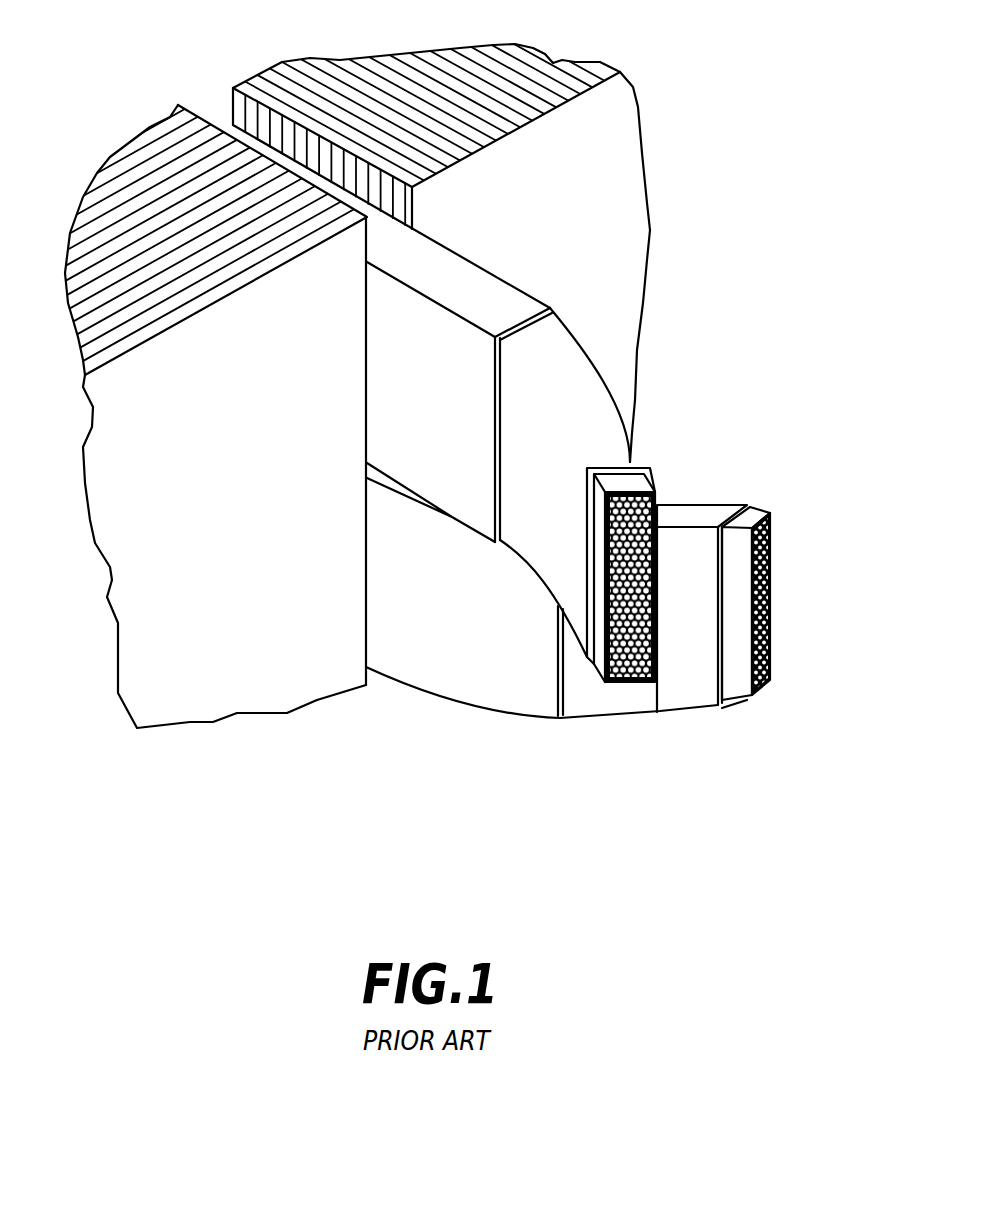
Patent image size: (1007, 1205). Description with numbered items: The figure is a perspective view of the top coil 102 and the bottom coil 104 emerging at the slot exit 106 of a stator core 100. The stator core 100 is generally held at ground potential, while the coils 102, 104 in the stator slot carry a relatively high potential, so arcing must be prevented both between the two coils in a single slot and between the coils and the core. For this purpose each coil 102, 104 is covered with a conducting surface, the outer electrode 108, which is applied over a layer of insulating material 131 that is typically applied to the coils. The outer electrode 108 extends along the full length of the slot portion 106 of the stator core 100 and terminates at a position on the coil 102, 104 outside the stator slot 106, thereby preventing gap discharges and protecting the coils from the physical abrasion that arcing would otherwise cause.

The stator core 100 is at (603, 122).
The top coil 102 is at (630, 680).
The bottom coil 104 is at (763, 687).
The slot exit 106 is at (425, 226).
The outer electrode 108 is at (487, 300).
The layer of insulating material 131 is at (627, 460).